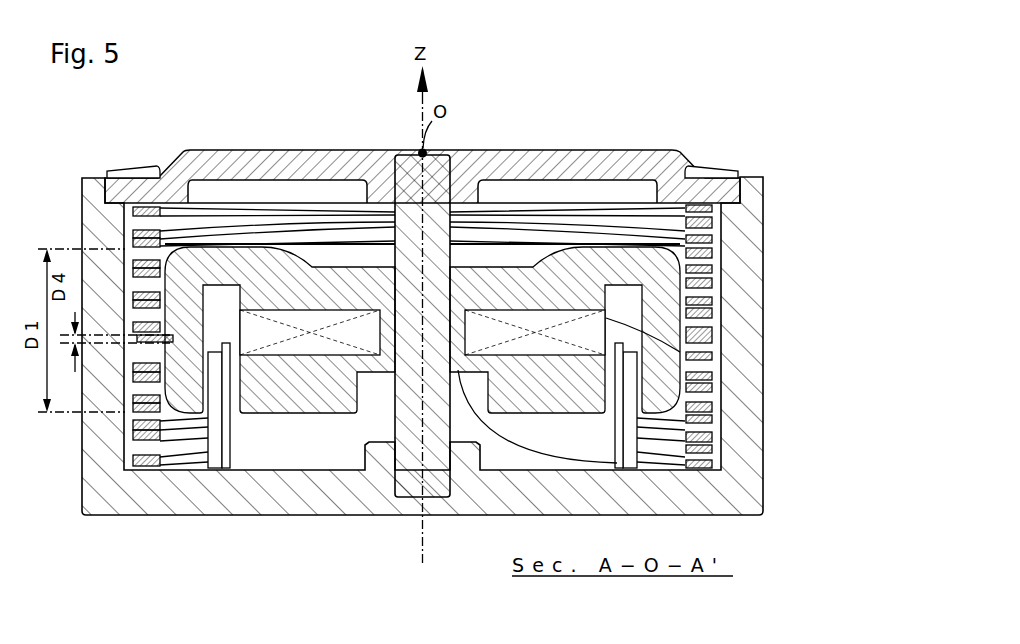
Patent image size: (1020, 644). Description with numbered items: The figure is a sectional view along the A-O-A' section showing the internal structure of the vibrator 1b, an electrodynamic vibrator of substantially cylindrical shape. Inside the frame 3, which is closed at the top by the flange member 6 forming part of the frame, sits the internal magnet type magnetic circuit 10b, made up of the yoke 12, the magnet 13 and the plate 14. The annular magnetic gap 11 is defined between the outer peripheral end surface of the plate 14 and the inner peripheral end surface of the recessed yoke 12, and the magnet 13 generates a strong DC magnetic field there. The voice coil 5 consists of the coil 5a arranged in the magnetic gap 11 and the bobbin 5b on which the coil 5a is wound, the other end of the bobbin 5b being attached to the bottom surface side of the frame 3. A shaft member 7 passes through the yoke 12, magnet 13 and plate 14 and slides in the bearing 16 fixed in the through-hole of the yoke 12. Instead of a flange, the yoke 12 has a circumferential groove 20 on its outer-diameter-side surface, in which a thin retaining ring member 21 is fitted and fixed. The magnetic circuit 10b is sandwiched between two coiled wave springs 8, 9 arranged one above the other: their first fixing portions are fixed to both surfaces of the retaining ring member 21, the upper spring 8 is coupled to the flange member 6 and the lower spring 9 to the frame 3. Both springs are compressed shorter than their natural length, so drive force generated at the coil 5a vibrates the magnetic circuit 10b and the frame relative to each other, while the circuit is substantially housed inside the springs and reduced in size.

The vibrator 1b is at (606, 136).
The frame 3 is at (82, 197).
The voice coil 5 is at (180, 461).
The coil 5a is at (211, 355).
The bobbin 5b is at (226, 348).
The flange member 6 is at (275, 150).
The shaft member 7 is at (397, 495).
The coiled wave spring 8 is at (130, 233).
The coiled wave spring 9 is at (140, 468).
The internal magnet type magnetic circuit 10b is at (672, 336).
The magnetic gap 11 is at (713, 422).
The yoke 12 is at (707, 253).
The magnet 13 is at (713, 352).
The plate 14 is at (597, 392).
The bearing 16 is at (746, 457).
The groove 20 is at (683, 327).
The retaining ring member 21 is at (707, 340).